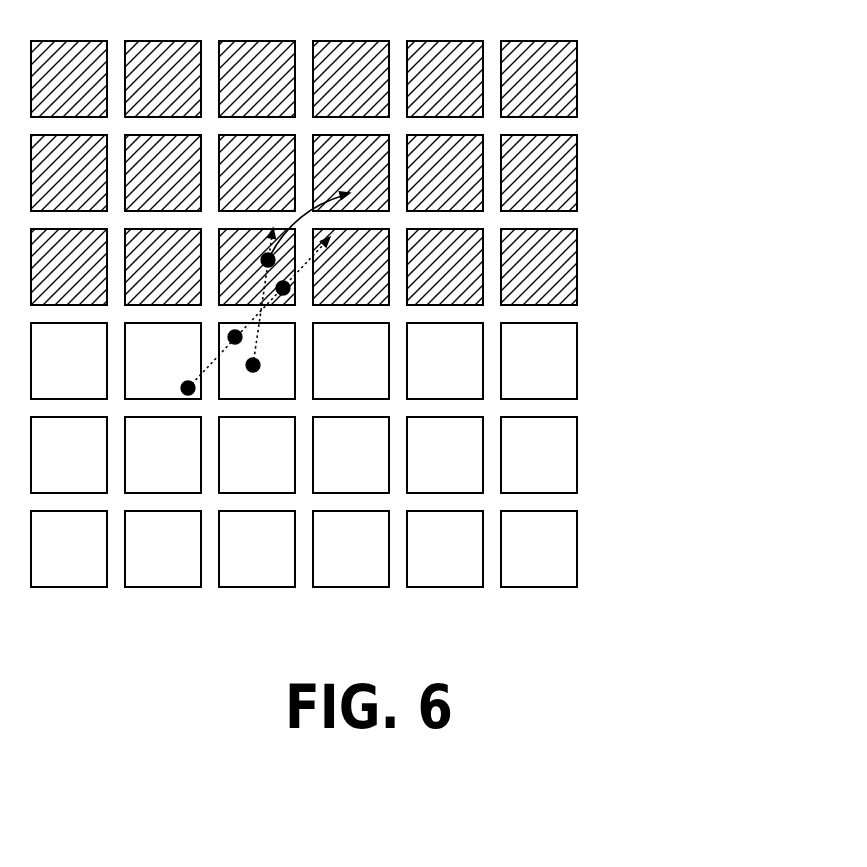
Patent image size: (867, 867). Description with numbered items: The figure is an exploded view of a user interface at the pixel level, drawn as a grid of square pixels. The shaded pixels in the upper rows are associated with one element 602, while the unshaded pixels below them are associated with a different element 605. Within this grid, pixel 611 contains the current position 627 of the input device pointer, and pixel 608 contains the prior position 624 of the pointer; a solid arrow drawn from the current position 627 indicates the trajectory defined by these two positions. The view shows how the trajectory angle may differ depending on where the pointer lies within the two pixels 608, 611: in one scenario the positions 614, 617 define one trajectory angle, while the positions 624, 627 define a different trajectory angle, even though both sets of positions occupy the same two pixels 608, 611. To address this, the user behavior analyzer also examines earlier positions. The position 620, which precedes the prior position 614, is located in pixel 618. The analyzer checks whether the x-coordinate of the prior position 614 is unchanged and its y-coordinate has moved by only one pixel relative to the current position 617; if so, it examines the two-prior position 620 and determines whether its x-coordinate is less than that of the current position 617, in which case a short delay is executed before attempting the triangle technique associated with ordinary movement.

The element 602 is at (374, 173).
The different element 605 is at (374, 455).
The pixel 608 is at (271, 396).
The pixel 611 is at (260, 253).
The prior position 614 is at (242, 337).
The current position 617 is at (290, 287).
The pixel 618 is at (170, 346).
The two-prior position 620 is at (186, 382).
The prior position 624 is at (260, 365).
The current position 627 is at (323, 226).